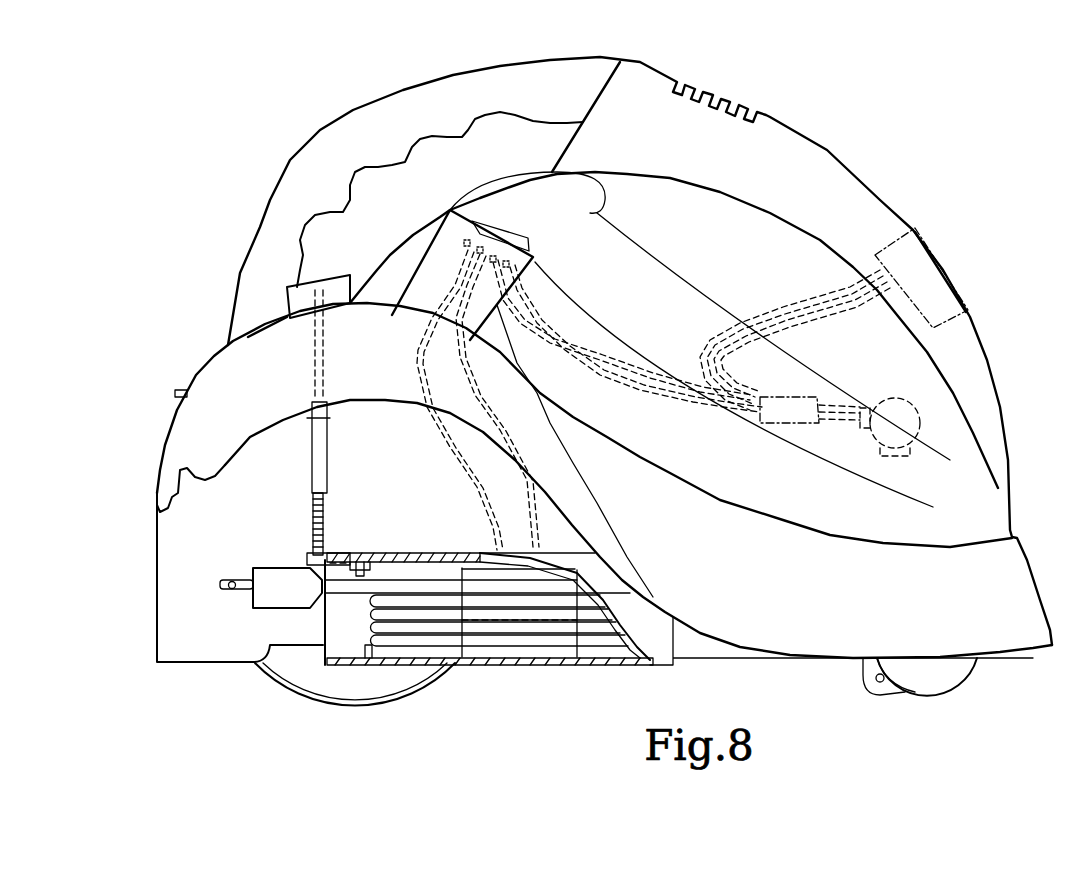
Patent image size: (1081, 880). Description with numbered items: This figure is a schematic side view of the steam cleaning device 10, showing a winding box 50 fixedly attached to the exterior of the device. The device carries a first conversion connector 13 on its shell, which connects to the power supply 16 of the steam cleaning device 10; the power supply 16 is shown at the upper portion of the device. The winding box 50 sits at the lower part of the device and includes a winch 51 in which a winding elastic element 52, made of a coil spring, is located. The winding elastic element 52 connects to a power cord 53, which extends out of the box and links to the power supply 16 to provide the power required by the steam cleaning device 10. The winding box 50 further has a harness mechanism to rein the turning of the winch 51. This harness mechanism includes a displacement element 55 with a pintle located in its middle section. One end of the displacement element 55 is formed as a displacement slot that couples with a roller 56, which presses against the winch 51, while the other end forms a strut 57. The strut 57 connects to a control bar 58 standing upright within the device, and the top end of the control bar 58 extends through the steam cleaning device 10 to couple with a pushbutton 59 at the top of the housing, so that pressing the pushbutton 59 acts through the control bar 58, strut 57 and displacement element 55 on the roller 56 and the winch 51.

The steam cleaning device 10 is at (827, 150).
The first conversion connector 13 is at (917, 270).
The power supply 16 is at (470, 248).
The winding box 50 is at (493, 670).
The winch 51 is at (410, 660).
The winding elastic element 52 is at (560, 643).
The power cord 53 is at (263, 590).
The displacement element 55 is at (357, 563).
The roller 56 is at (360, 553).
The strut 57 is at (320, 562).
The control bar 58 is at (307, 523).
The pushbutton 59 is at (297, 303).